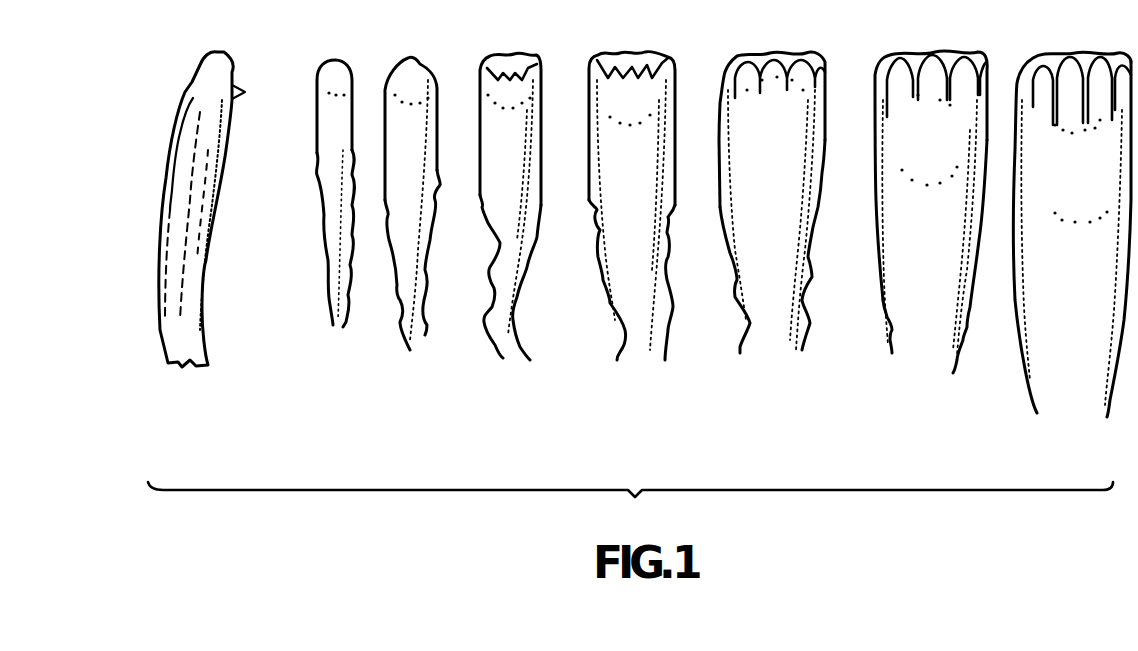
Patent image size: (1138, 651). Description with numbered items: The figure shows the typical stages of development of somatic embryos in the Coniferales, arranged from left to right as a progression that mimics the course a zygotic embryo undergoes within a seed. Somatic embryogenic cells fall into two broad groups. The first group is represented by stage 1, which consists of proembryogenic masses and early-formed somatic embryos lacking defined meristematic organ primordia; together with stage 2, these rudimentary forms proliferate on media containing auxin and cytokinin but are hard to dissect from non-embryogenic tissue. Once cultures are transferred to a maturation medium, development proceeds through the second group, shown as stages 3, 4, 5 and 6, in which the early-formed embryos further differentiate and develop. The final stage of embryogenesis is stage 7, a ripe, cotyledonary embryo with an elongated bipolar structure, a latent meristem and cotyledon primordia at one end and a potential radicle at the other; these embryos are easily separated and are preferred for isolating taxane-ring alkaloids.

The stage 1 embryo 1 is at (222, 170).
The stage 2 embryo 2 is at (317, 98).
The stage 3 embryo 3 is at (412, 203).
The stage 4 embryo 4 is at (510, 206).
The stage 5 embryo 5 is at (632, 206).
The stage 6 embryo 6 is at (853, 212).
The stage 7 embryo 7 is at (1073, 234).